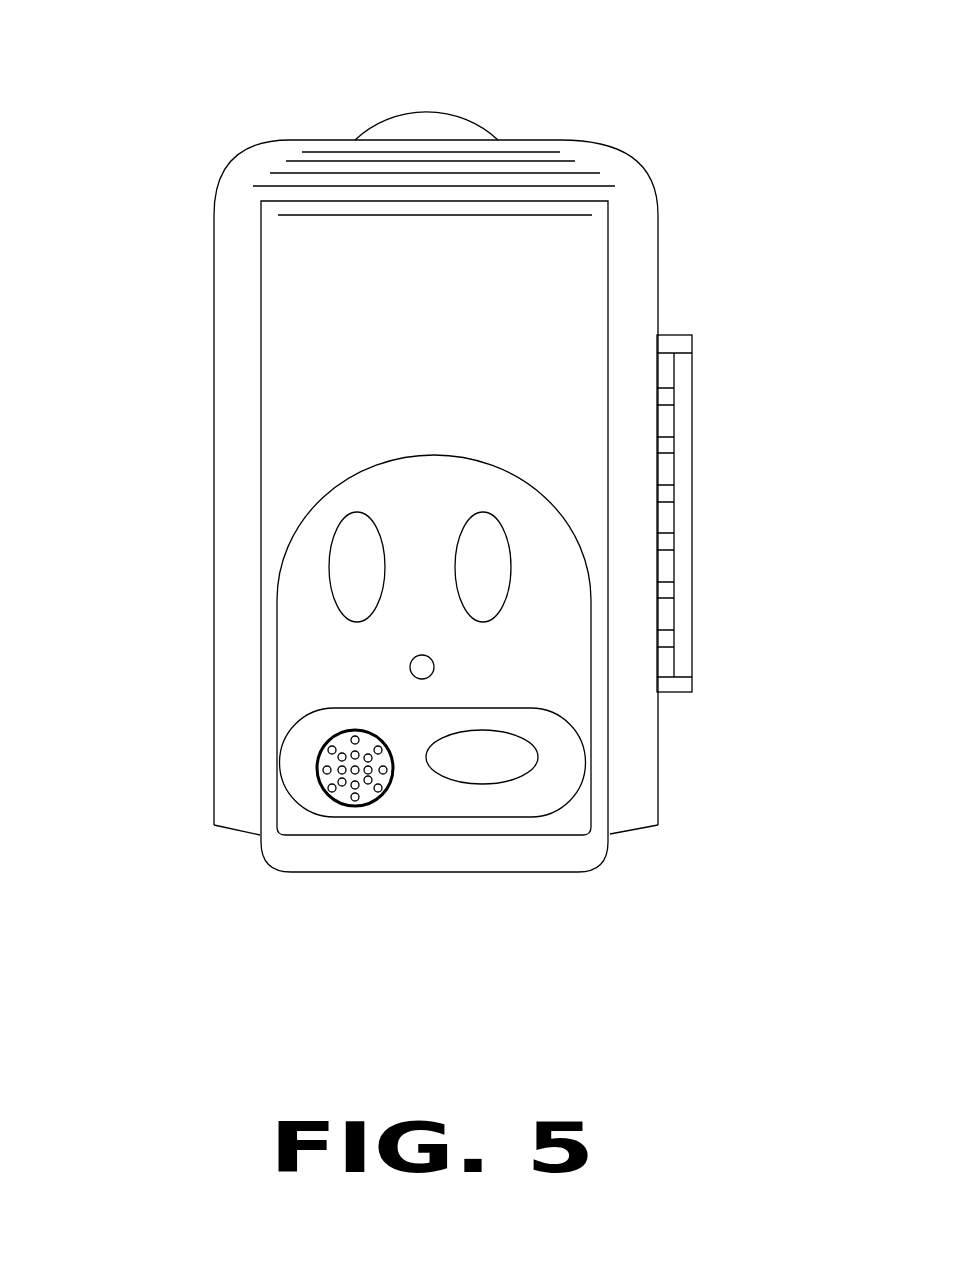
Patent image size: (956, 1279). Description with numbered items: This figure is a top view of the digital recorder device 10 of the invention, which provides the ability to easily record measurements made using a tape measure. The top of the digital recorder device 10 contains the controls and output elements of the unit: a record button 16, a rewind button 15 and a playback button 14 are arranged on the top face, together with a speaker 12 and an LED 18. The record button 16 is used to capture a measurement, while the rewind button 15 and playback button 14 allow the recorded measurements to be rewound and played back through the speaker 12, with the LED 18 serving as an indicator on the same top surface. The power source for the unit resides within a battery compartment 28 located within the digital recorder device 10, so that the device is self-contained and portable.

The digital recorder device 10 is at (605, 150).
The speaker 12 is at (326, 770).
The playback button 14 is at (340, 553).
The rewind button 15 is at (497, 550).
The record button 16 is at (682, 438).
The LED 18 is at (408, 665).
The battery compartment 28 is at (445, 122).